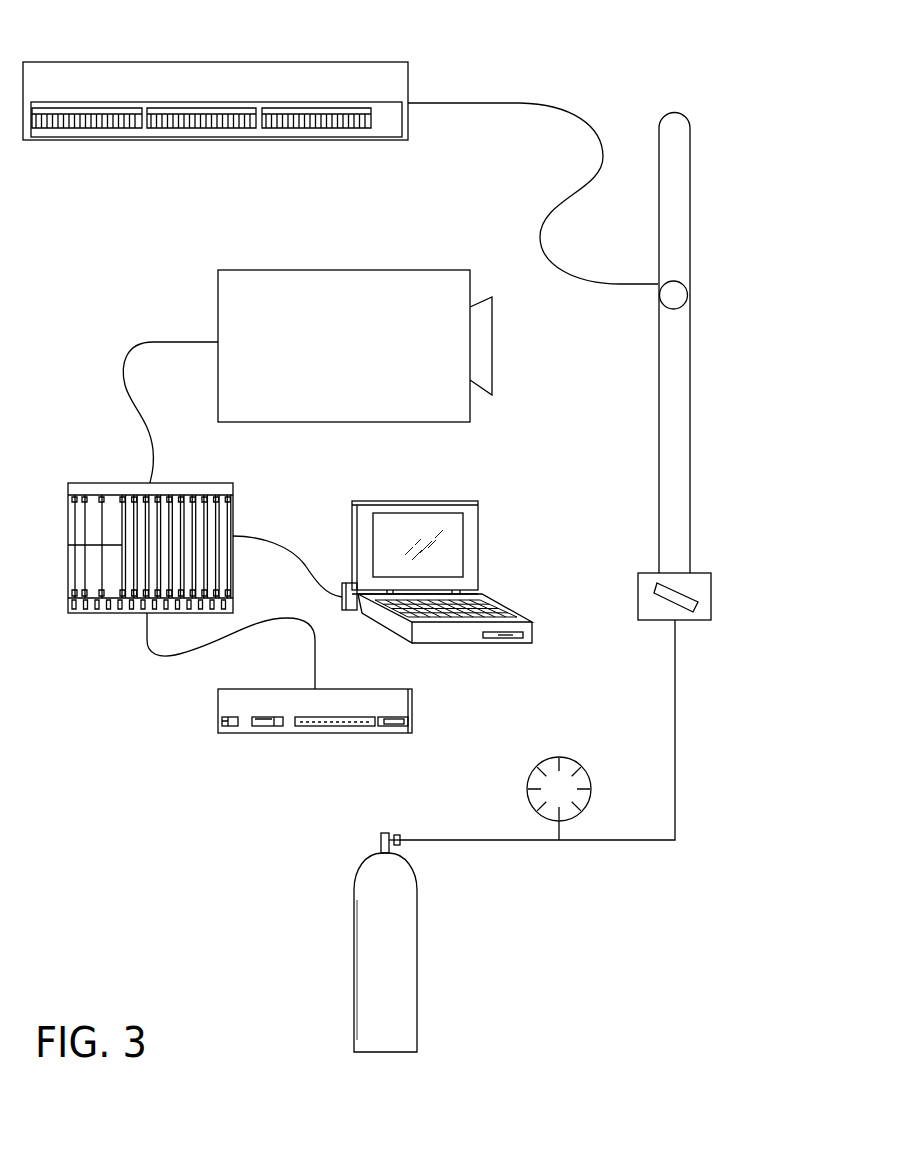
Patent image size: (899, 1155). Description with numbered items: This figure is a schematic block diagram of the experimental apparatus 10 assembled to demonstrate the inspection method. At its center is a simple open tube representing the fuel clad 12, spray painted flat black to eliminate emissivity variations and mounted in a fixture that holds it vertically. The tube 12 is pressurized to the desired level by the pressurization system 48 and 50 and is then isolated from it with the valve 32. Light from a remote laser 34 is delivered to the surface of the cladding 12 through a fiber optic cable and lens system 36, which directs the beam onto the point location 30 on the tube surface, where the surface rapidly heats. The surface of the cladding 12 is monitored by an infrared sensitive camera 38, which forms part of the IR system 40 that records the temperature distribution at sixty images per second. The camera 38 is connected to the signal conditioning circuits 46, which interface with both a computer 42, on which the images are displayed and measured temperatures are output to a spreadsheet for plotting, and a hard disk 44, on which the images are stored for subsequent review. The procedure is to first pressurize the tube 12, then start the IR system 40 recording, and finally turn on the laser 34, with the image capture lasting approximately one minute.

The monitoring system 10 is at (715, 320).
The fuel clad 12 is at (690, 436).
The point location 30 is at (659, 288).
The valve 32 is at (700, 573).
The remote laser 34 is at (202, 62).
The fiber optic cable and lens system 36 is at (527, 105).
The infrared sensitive camera 38 is at (357, 270).
The IR system 40 is at (321, 482).
The computer 42 is at (478, 547).
The hard disk 44 is at (295, 733).
The signal conditioning circuits 46 is at (80, 483).
The pressurization system 48 is at (417, 978).
The pressurization system 50 is at (580, 764).